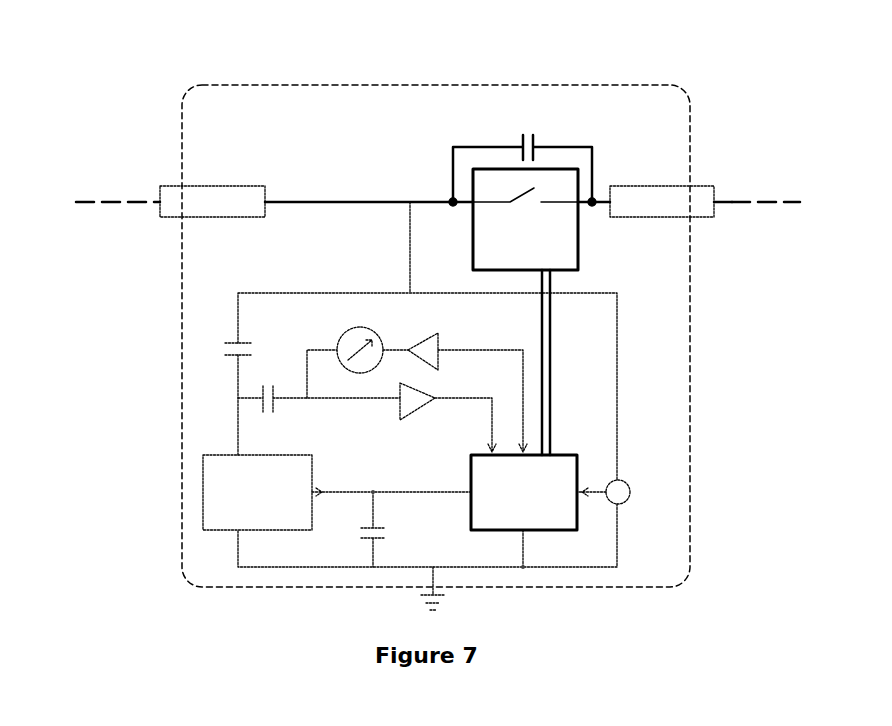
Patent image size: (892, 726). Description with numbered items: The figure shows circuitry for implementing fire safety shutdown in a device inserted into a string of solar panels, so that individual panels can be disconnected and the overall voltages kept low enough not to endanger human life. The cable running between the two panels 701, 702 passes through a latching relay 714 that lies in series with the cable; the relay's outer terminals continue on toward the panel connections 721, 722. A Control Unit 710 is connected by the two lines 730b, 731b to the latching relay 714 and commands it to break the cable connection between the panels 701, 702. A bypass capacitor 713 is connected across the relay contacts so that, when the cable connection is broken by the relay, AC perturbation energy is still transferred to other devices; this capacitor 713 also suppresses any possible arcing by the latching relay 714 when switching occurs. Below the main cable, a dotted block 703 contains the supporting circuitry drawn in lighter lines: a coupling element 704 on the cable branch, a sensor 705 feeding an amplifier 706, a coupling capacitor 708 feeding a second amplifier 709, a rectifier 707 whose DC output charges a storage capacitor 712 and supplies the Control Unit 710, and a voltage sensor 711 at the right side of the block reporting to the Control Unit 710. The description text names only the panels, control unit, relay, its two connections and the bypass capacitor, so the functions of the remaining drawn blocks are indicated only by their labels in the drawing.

The panel 701 is at (160, 186).
The panel 702 is at (668, 187).
The energy harvesting circuit 703 is at (183, 378).
The current transformer 704 is at (235, 343).
The current sensor 705 is at (346, 336).
The comparator 706 is at (477, 326).
The rectifier 707 is at (230, 455).
The coupling capacitor 708 is at (322, 435).
The amplifier 709 is at (398, 414).
The Control Unit 710 is at (602, 443).
The voltage sensor 711 is at (670, 457).
The storage capacitor 712 is at (358, 530).
The bypass capacitor 713 is at (540, 145).
The latching relay 714 is at (578, 266).
The first power line 721 is at (80, 200).
The second power line 722 is at (798, 201).
The connection 730b is at (612, 327).
The connection 731b is at (612, 365).